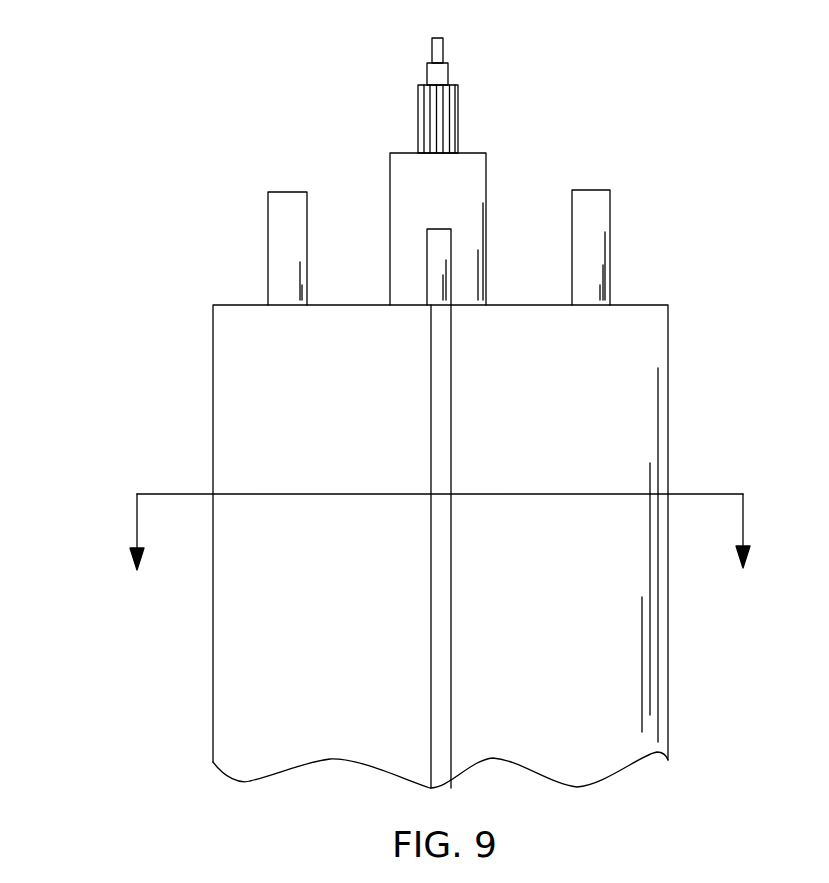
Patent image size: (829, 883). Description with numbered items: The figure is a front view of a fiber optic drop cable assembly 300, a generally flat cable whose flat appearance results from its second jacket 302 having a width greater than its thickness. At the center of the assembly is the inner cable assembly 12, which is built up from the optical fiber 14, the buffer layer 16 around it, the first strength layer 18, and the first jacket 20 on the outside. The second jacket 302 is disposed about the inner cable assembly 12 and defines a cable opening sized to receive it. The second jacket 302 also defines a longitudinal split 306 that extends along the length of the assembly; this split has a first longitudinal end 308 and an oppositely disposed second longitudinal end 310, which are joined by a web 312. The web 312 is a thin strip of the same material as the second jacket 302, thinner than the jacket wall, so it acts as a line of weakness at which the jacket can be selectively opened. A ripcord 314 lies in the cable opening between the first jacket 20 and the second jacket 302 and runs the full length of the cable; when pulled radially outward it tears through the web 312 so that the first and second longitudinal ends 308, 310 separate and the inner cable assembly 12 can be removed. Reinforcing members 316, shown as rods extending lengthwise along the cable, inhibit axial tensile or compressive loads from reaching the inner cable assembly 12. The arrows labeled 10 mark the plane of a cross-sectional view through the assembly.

The section line 10 is at (442, 554).
The inner cable assembly 12 is at (477, 162).
The optical fiber 14 is at (442, 45).
The buffer layer 16 is at (448, 70).
The first strength layer 18 is at (417, 112).
The first jacket 20 is at (390, 187).
The fiber optic drop cable assembly 300 is at (391, 507).
The second jacket 302 is at (672, 325).
The longitudinal split 306 is at (420, 727).
The first longitudinal end 308 is at (431, 350).
The second longitudinal end 310 is at (451, 393).
The web 312 is at (440, 640).
The ripcord 314 is at (452, 243).
The reinforcing members 316 is at (268, 203).